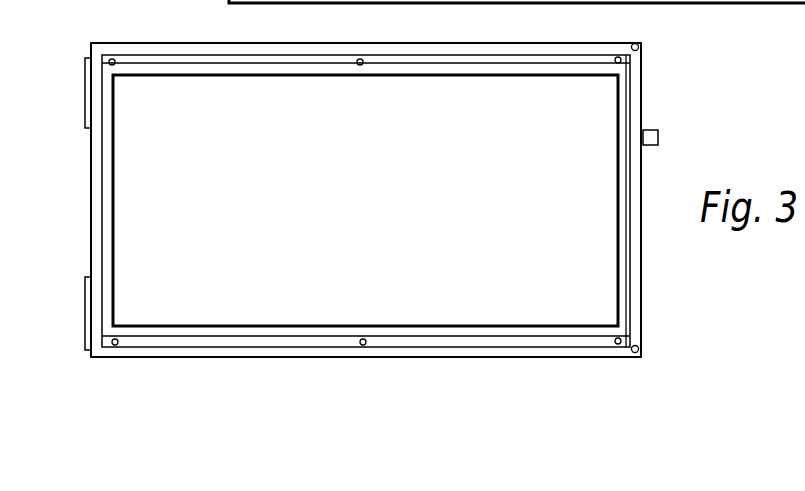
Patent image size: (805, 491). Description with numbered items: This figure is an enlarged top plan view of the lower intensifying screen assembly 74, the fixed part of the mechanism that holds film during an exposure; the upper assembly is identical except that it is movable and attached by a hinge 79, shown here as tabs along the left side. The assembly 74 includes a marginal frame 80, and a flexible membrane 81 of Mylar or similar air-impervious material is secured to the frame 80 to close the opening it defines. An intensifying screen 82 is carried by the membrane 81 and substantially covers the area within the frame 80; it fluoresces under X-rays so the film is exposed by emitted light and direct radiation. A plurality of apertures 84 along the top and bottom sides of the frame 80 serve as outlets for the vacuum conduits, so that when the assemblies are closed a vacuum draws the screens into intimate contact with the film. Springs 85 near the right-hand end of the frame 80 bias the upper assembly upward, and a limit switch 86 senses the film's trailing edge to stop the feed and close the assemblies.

The lower intensifying screen assembly 74 is at (80, 82).
The hinge 79 is at (82, 115).
The marginal frame 80 is at (640, 173).
The flexible membrane 81 is at (623, 113).
The intensifying screen 82 is at (540, 93).
The apertures 84 is at (113, 58).
The springs 85 is at (639, 46).
The limit switch 86 is at (658, 137).